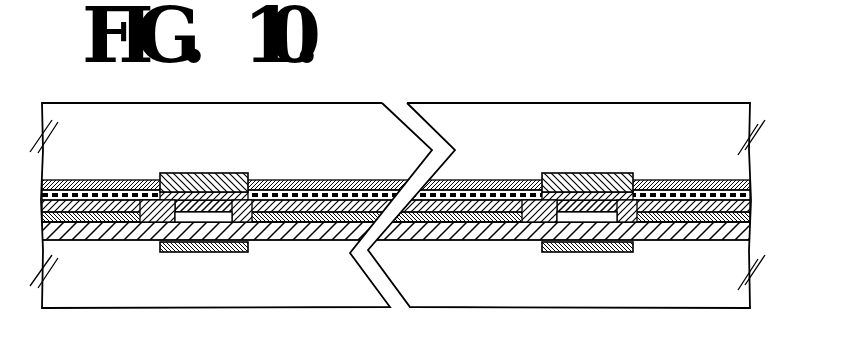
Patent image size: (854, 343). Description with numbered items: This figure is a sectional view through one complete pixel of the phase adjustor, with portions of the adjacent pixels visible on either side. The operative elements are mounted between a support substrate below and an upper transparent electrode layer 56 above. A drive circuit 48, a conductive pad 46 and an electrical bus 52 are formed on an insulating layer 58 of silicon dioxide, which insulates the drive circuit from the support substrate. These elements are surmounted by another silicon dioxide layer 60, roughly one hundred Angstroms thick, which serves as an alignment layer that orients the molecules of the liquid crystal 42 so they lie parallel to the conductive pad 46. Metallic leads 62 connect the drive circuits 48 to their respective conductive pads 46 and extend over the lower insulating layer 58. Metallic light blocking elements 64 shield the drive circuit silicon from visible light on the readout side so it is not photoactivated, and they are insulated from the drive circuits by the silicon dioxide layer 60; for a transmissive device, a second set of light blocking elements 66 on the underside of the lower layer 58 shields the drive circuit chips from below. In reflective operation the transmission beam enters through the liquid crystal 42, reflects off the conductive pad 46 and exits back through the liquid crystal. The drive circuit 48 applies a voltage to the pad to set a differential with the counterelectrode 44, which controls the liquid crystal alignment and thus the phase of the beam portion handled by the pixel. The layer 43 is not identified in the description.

The liquid crystal 42 is at (518, 181).
The top conductive layer 43 is at (693, 184).
The counterelectrode 44 is at (472, 181).
The conductive pad 46 is at (303, 239).
The drive circuit 48 is at (163, 238).
The electrical bus 52 is at (272, 192).
The upper transparent electrode layer 56 is at (478, 121).
The insulating layer 58 is at (330, 236).
The SiO2 layer 60 is at (356, 210).
The metallic leads 62 is at (515, 233).
The metallic light blocking elements 64 is at (212, 174).
The light blocking elements 66 is at (205, 252).